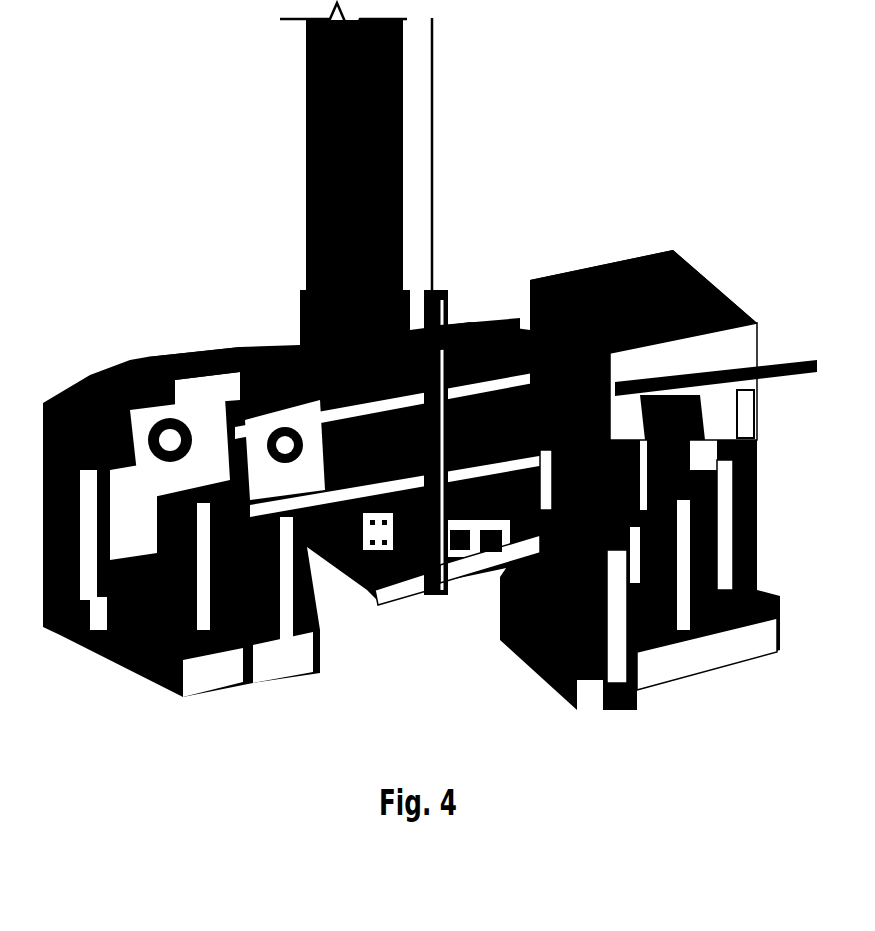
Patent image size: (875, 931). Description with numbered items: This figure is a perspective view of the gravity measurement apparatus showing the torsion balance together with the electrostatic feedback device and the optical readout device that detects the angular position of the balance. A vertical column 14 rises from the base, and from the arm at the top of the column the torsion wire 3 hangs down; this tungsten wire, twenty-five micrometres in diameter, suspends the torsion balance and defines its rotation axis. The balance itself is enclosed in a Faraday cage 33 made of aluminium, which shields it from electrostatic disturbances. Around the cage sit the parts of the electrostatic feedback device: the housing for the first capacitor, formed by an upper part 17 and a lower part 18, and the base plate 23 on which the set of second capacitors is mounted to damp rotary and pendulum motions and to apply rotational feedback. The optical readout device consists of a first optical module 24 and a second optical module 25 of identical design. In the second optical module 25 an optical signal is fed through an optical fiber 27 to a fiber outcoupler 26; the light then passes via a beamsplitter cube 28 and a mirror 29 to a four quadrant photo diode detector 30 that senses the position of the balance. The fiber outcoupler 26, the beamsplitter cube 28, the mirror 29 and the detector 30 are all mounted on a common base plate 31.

The torsion wire 3 is at (433, 80).
The vertical column 14 is at (330, 133).
The upper part of the housing 17 is at (673, 298).
The lower part of the housing 18 is at (745, 405).
The base plate 23 is at (370, 600).
The first optical module 24 is at (215, 337).
The second optical module 25 is at (680, 585).
The fiber outcoupler 26 is at (655, 395).
The optical fiber 27 is at (815, 365).
The beamsplitter cube 28 is at (555, 410).
The mirror 29 is at (580, 475).
The four quadrant photo diode detector 30 is at (705, 445).
The base plate 31 is at (707, 657).
The Faraday cage 33 is at (463, 340).